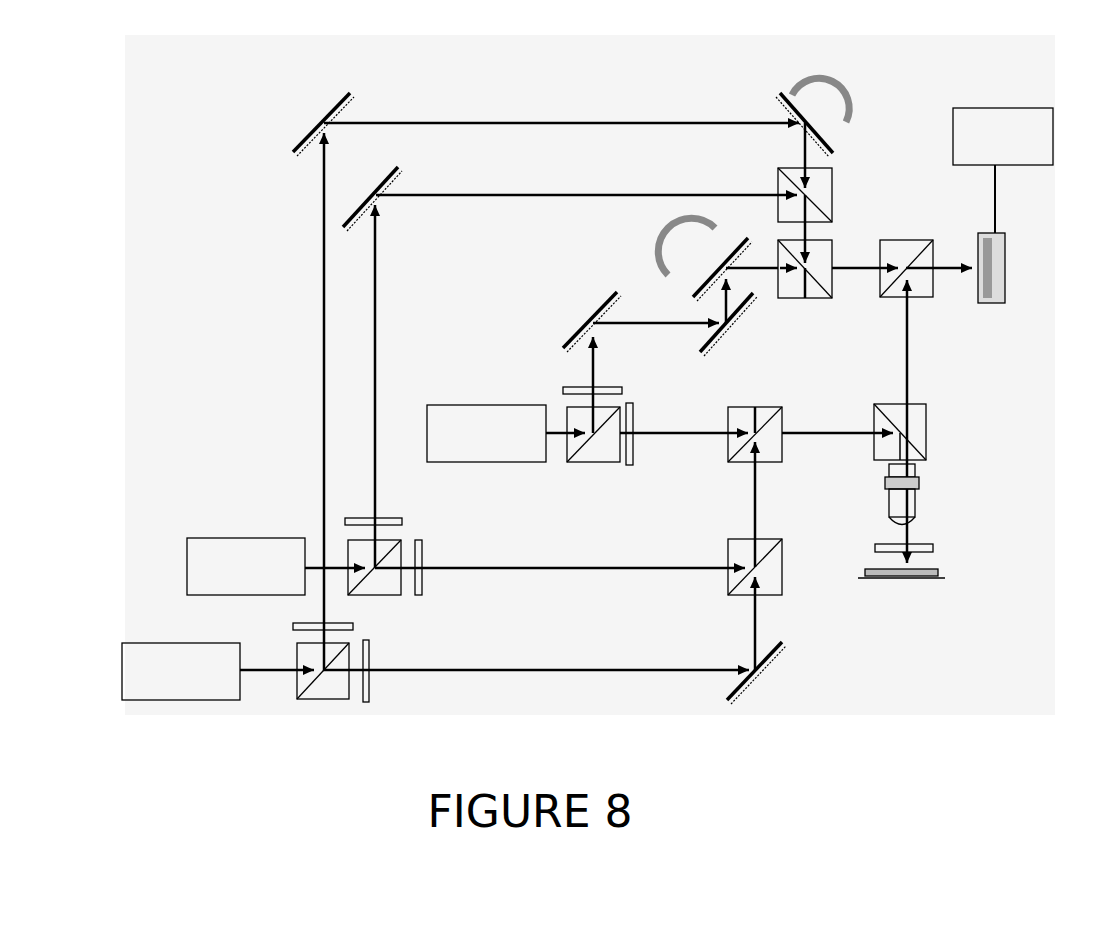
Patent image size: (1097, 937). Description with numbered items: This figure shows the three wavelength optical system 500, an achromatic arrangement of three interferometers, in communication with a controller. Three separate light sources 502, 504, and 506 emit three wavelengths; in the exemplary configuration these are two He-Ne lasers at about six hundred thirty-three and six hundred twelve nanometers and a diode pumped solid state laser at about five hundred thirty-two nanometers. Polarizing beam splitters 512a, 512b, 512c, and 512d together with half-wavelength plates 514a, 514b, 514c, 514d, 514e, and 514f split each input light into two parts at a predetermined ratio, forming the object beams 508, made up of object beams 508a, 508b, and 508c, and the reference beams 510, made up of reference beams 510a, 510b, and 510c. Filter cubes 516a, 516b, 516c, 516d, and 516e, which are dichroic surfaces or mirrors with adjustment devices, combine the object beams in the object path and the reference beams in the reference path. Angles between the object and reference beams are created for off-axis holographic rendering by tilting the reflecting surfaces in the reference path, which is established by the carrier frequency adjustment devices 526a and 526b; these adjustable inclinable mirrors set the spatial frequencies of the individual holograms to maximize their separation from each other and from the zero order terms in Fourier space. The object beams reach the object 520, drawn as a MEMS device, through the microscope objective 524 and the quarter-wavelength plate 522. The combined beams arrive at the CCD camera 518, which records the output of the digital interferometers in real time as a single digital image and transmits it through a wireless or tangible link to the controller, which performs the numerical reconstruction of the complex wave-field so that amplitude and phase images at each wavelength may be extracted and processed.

The three wavelength optical system 500 is at (547, 60).
The light source 502 is at (187, 572).
The light source 504 is at (427, 408).
The light source 506 is at (122, 670).
The object beams 508 is at (578, 707).
The object beam 508a is at (642, 674).
The object beam 508b is at (640, 570).
The object beam 508c is at (683, 440).
The reference beams 510 is at (270, 312).
The reference beam 510a is at (323, 237).
The reference beam 510b is at (376, 293).
The reference beam 510c is at (598, 338).
The polarizing beam splitter 512a is at (297, 690).
The polarizing beam splitter 512b is at (350, 550).
The polarizing beam splitter 512c is at (620, 463).
The polarizing beam splitter 512d is at (925, 403).
The half-wavelength plate 514a is at (372, 690).
The half-wavelength plate 514b is at (355, 628).
The half-wavelength plate 514c is at (423, 568).
The half-wavelength plate 514d is at (403, 525).
The half-wavelength plate 514e is at (636, 430).
The half-wavelength plate 514f is at (557, 392).
The filter cube 516a is at (745, 537).
The filter cube 516b is at (748, 405).
The filter cube 516c is at (790, 300).
The filter cube 516d is at (893, 238).
The filter cube 516e is at (837, 200).
The CCD camera 518 is at (1008, 256).
The object 520 is at (908, 578).
The quarter-wavelength plate 522 is at (873, 548).
The microscope objective 524 is at (917, 508).
The carrier frequency adjustment device 526a is at (678, 230).
The carrier frequency adjustment device 526b is at (852, 125).